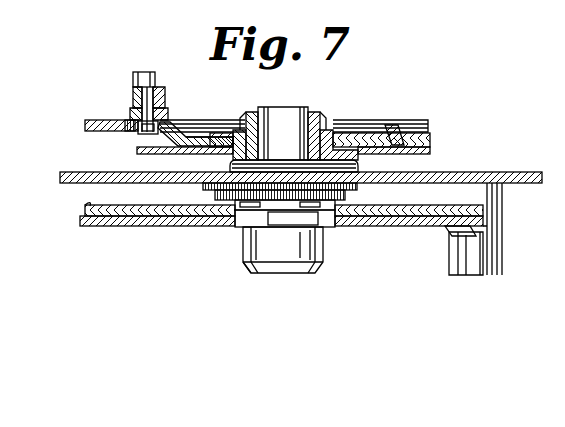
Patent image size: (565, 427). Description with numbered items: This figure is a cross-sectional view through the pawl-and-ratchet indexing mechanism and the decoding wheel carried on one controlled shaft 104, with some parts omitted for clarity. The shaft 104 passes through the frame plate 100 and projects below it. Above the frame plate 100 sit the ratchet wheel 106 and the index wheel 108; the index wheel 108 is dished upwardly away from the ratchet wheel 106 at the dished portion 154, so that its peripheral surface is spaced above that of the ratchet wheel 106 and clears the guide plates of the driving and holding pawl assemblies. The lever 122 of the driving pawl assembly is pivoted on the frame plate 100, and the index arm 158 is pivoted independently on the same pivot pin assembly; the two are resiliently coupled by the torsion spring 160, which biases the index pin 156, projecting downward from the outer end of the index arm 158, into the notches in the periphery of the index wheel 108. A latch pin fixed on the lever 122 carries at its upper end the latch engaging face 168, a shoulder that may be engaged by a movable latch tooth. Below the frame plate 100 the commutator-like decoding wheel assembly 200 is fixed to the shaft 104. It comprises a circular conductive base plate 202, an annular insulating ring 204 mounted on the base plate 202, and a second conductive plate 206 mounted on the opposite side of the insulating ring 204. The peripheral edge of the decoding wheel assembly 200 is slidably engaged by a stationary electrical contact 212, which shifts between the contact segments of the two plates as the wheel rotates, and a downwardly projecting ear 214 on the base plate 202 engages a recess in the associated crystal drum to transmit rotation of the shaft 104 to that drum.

The frame plate 100 is at (528, 157).
The controlled shaft 104 is at (292, 108).
The ratchet wheel 106 is at (426, 150).
The index wheel 108 is at (366, 108).
The lever 122 is at (86, 120).
The dished portion 154 is at (392, 133).
The index pin 156 is at (140, 134).
The index arm 158 is at (132, 112).
The torsion spring 160 is at (138, 94).
The latch engaging face 168 is at (144, 74).
The decoding wheel assembly 200 is at (226, 236).
The base plate 202 is at (342, 232).
The insulating ring 204 is at (128, 226).
The second conductive plate 206 is at (86, 206).
The stationary electrical contact 212 is at (466, 264).
The ear 214 is at (448, 236).